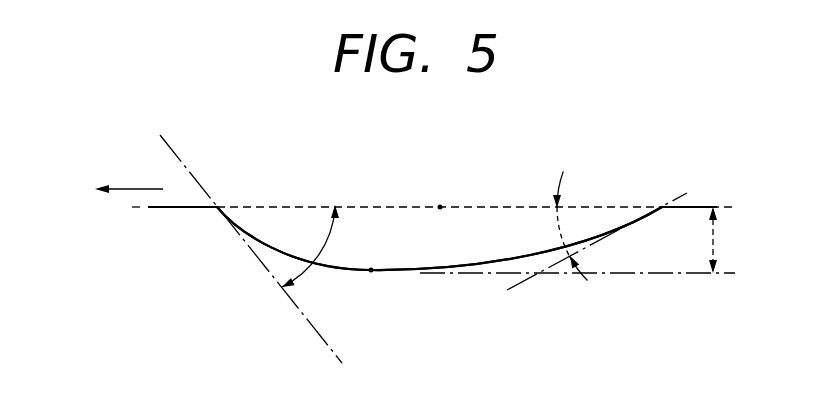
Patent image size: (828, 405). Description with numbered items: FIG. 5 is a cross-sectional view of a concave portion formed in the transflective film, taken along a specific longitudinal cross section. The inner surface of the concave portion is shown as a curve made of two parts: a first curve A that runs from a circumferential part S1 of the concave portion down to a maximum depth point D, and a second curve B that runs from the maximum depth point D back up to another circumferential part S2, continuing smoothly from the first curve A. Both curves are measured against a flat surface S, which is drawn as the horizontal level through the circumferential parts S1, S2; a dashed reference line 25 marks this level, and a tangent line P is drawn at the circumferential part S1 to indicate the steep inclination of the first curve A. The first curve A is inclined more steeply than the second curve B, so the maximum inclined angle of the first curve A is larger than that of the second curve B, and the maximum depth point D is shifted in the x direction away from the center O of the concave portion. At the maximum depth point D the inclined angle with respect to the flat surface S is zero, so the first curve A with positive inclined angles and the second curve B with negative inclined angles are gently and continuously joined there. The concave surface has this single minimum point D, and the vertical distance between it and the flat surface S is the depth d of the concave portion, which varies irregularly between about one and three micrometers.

The reference line (original flat surface position) 25 is at (464, 213).
The tangent line at edge S1 P is at (131, 140).
The flat surface S is at (692, 207).
The circumferential part S1 is at (217, 207).
The another circumferential part S2 is at (662, 207).
The center of the concave portion O is at (439, 193).
The maximum depth point D is at (371, 287).
The first curve A is at (265, 250).
The second curve B is at (458, 268).
The depth of the concave portion d is at (577, 240).
The x-direction x is at (122, 175).